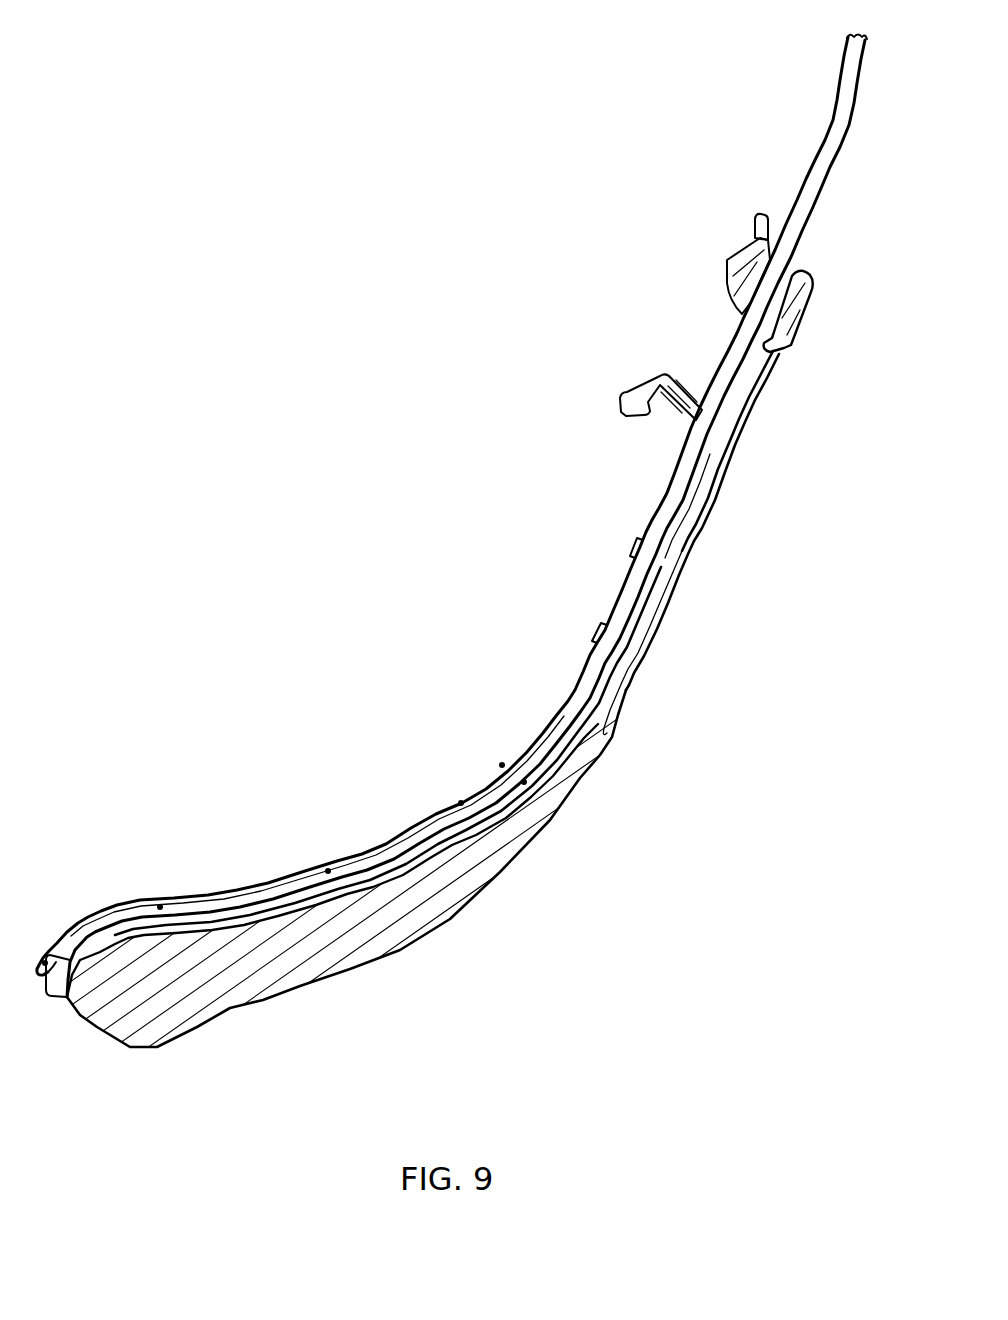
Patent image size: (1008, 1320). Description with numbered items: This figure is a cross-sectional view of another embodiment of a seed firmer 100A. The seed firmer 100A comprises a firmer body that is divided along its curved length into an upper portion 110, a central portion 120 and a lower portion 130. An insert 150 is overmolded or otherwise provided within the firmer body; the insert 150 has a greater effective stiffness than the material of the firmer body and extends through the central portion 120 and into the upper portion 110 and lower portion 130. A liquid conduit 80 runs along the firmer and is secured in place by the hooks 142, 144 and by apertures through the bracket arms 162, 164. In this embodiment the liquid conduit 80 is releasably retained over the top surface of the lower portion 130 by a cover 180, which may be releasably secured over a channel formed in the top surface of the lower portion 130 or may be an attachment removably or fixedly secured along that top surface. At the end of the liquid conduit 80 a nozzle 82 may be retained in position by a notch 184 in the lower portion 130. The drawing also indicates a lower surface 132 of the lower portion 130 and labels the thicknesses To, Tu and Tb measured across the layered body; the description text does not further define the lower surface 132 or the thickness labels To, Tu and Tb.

The liquid conduit 80 is at (827, 132).
The nozzle 82 is at (46, 990).
The seed firmer 100A is at (255, 300).
The upper portion 110 is at (773, 358).
The central portion 120 is at (647, 662).
The lower portion 130 is at (447, 877).
The body lower surface 132 is at (268, 1012).
The hook 142 is at (592, 640).
The hook 144 is at (636, 543).
The insert 150 is at (757, 418).
The bracket arm 162 is at (637, 418).
The bracket arm 164 is at (733, 268).
The cover 180 is at (197, 890).
The notch 184 is at (77, 983).
The outer thickness To is at (640, 437).
The upper thickness Tu is at (610, 483).
The body thickness Tb is at (507, 677).